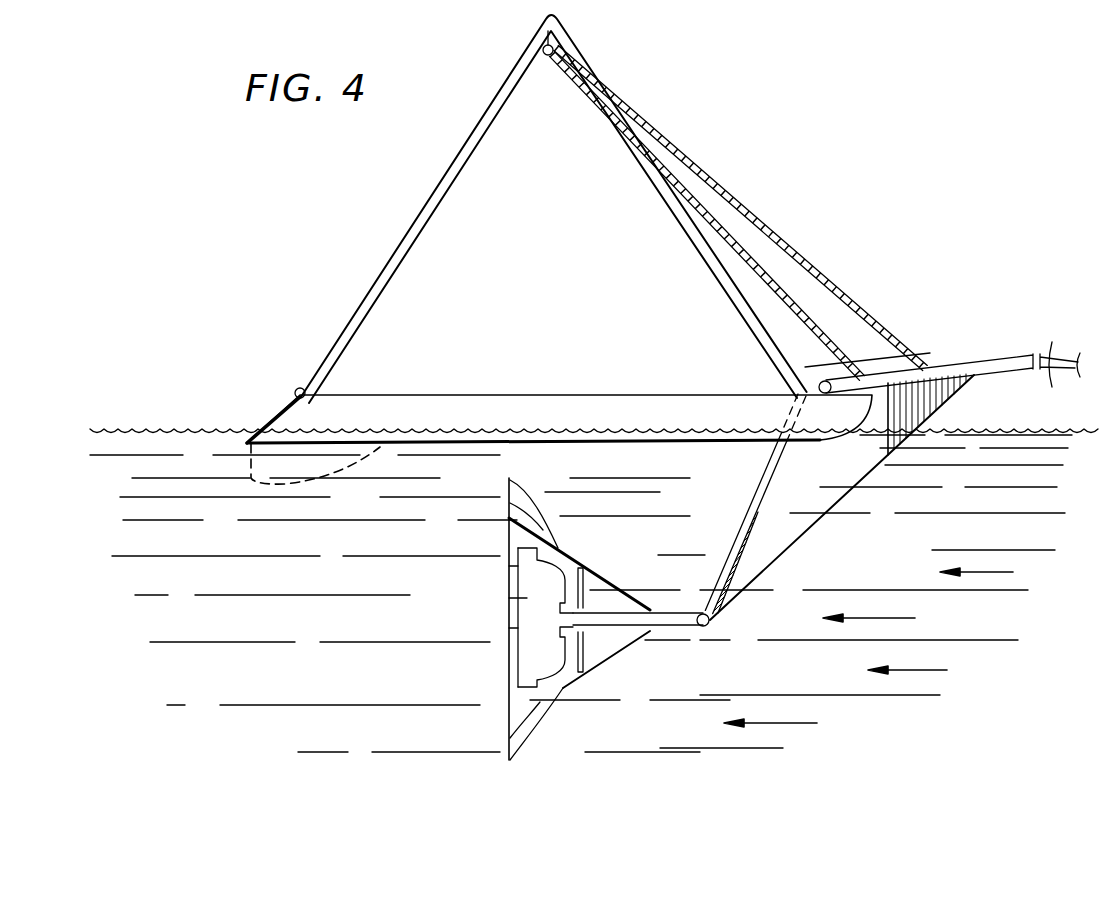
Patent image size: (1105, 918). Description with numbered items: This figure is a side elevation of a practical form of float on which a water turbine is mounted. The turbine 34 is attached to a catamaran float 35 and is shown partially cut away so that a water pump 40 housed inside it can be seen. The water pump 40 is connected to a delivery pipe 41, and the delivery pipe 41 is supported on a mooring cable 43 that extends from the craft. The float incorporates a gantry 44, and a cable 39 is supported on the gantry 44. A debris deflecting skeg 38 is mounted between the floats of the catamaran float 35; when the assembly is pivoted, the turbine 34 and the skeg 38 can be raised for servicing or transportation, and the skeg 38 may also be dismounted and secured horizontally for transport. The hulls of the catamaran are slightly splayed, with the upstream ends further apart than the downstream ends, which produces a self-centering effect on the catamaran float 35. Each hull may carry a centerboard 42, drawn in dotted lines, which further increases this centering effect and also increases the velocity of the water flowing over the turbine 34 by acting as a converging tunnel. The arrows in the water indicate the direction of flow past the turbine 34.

The water turbine 34 is at (572, 557).
The catamaran float 35 is at (278, 413).
The debris deflecting skeg 38 is at (812, 513).
The cable 39 is at (797, 247).
The water pump 40 is at (520, 589).
The delivery pipe 41 is at (962, 372).
The centerboard 42 is at (288, 485).
The mooring cable 43 is at (1040, 367).
The gantry 44 is at (432, 198).